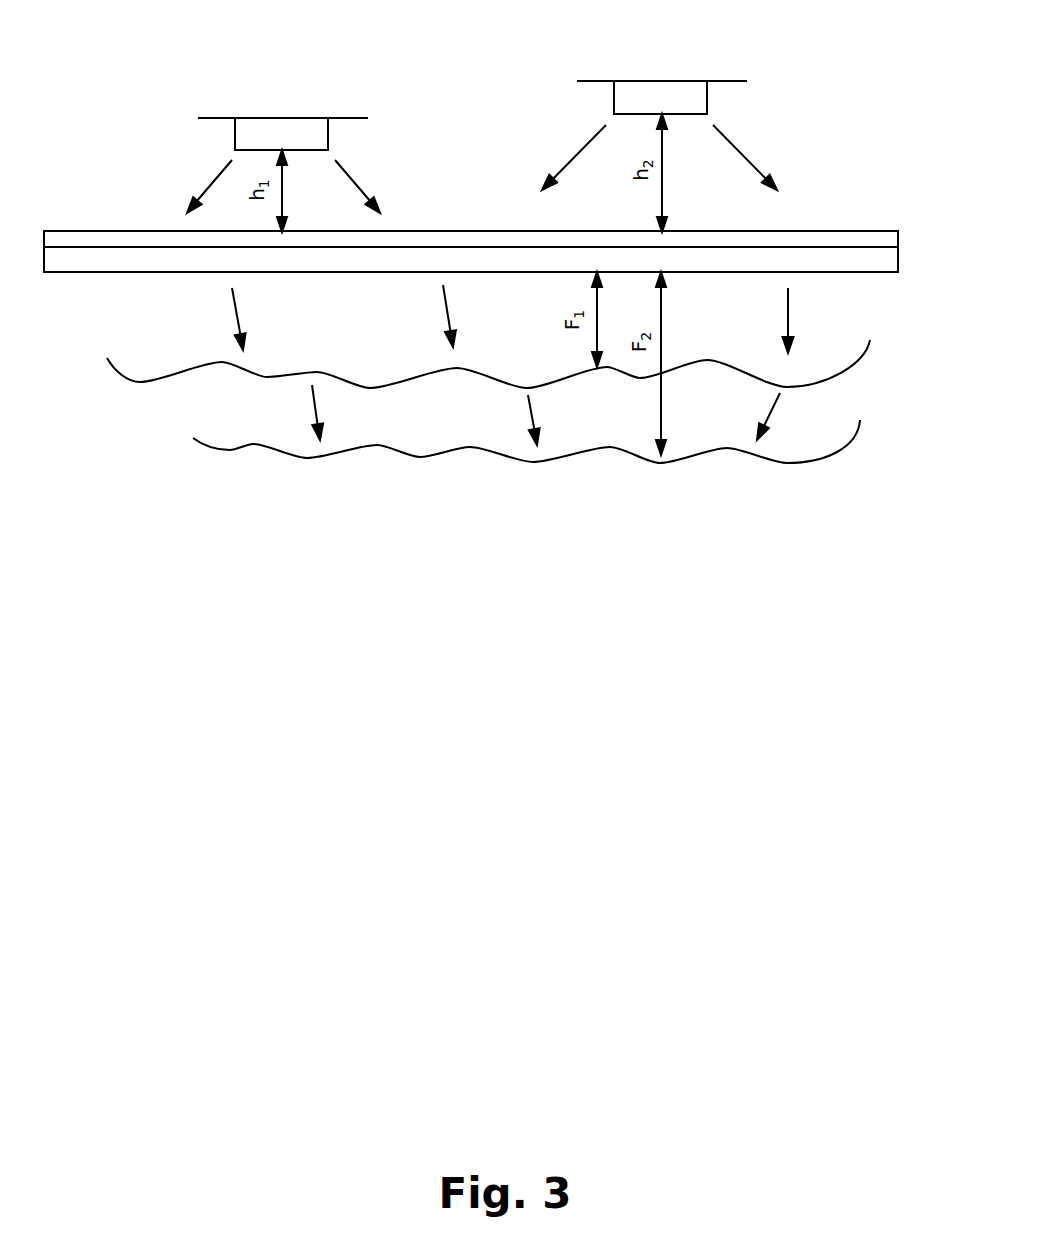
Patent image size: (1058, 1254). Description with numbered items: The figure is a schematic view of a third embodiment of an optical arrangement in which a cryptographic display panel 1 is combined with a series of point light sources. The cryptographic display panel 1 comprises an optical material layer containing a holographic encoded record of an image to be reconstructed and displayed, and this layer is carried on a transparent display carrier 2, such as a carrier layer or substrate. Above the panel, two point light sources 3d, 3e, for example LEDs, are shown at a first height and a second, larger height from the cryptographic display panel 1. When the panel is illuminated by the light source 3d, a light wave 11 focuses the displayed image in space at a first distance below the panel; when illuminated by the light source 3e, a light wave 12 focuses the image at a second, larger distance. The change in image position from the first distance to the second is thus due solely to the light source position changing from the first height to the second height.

The point light source 3d is at (283, 134).
The point light source 3e is at (659, 103).
The cryptographic display panel 1 is at (502, 204).
The transparent display carrier 2 is at (502, 280).
The light wave 11 is at (475, 384).
The light wave 12 is at (526, 466).